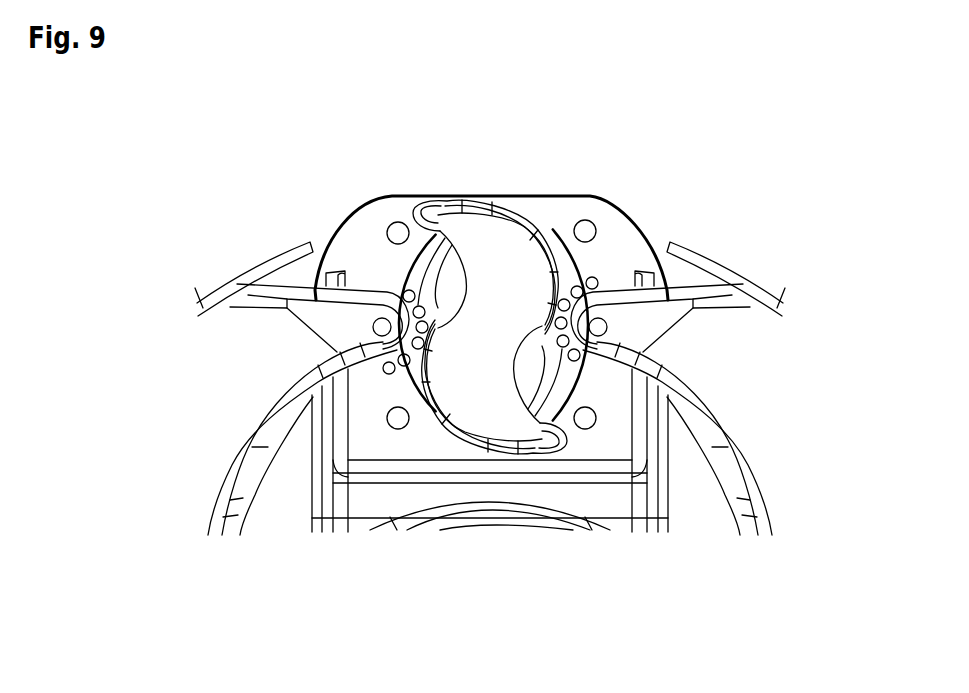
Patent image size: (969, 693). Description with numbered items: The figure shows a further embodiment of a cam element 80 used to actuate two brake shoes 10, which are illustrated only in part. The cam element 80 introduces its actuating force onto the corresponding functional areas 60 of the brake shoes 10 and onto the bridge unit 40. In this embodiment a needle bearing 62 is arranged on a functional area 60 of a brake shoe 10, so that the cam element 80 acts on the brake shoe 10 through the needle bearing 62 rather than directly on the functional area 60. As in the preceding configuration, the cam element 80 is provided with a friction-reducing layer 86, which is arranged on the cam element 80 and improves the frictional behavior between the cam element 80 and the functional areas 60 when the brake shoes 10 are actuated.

The brake shoe 10 is at (487, 438).
The bridge unit 40 is at (229, 404).
The functional area 60 is at (390, 292).
The needle bearing 62 is at (402, 290).
The cam element 80 is at (472, 227).
The friction-reducing layer 86 is at (520, 211).